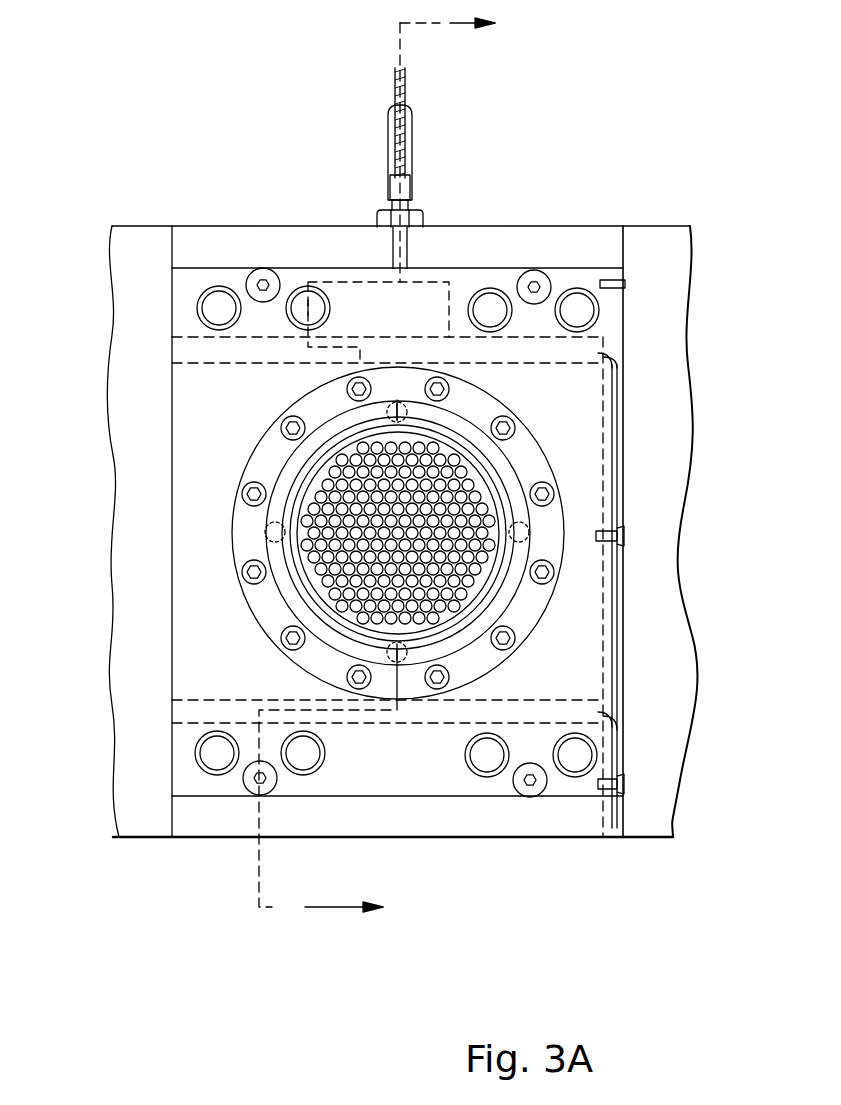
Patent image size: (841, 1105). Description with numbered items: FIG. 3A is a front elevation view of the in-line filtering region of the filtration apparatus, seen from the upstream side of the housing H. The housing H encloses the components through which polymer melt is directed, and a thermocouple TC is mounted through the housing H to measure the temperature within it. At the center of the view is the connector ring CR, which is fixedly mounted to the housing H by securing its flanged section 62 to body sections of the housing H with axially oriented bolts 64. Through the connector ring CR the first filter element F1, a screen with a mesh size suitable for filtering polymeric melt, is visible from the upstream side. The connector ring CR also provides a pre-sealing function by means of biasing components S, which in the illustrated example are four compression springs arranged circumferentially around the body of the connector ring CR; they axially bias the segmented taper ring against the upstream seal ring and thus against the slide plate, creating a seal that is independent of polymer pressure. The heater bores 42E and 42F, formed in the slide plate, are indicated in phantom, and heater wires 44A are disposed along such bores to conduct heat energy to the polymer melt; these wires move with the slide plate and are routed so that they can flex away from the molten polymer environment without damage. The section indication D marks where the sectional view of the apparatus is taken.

The housing H is at (156, 193).
The thermocouple TC is at (395, 93).
The section line D- D is at (448, 25).
The heater bore 42E is at (460, 228).
The heater bore 42F is at (416, 722).
The flanged section 62 is at (230, 543).
The first filter element F1 is at (293, 488).
The connector ring CR is at (300, 465).
The bolts 64 is at (283, 632).
The biasing components S is at (387, 410).
The heater wires 44A is at (617, 748).